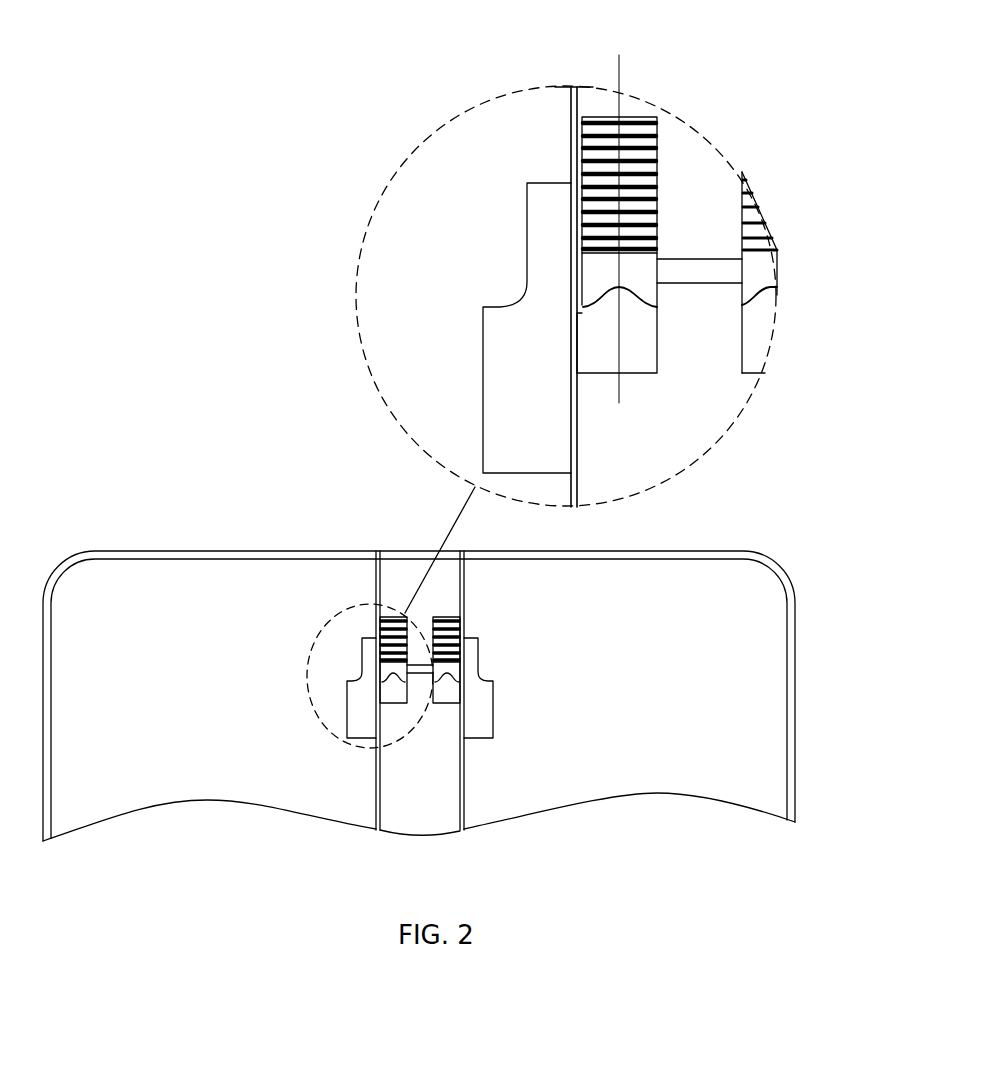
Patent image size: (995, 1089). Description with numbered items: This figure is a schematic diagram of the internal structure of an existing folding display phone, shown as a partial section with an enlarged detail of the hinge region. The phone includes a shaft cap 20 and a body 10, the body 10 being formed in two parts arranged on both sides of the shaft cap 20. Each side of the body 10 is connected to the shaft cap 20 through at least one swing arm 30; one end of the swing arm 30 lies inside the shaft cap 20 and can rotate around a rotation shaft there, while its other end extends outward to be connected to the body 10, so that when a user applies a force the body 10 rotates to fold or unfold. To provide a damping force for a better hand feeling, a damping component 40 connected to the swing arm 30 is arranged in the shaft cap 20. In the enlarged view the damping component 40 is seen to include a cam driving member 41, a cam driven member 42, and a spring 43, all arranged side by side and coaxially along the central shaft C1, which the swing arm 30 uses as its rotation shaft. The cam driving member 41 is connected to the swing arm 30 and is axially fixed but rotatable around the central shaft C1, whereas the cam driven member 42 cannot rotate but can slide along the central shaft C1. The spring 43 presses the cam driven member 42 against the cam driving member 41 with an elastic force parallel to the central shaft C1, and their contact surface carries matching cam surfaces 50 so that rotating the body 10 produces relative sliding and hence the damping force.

The body 10 is at (197, 578).
The shaft cap 20 is at (402, 567).
The swing arm 30 is at (500, 413).
The damping component 40 is at (407, 640).
The cam driving member 41 is at (640, 343).
The cam driven member 42 is at (638, 270).
The spring 43 is at (608, 113).
The cam surface 50 is at (607, 293).
The central shaft C1 is at (622, 247).